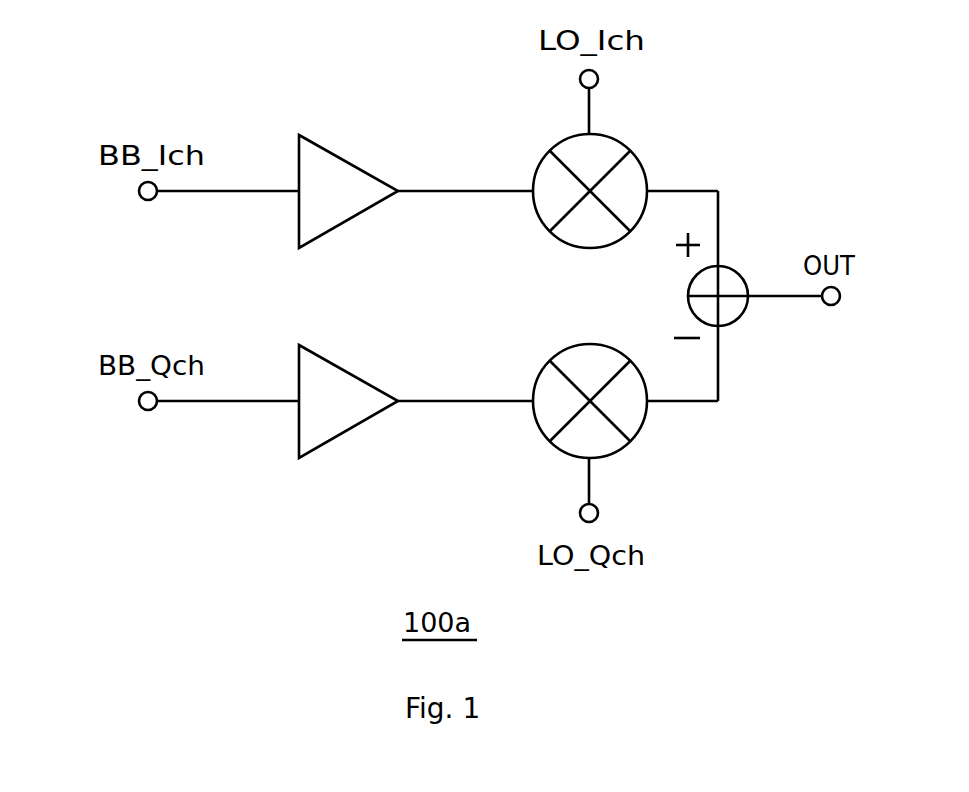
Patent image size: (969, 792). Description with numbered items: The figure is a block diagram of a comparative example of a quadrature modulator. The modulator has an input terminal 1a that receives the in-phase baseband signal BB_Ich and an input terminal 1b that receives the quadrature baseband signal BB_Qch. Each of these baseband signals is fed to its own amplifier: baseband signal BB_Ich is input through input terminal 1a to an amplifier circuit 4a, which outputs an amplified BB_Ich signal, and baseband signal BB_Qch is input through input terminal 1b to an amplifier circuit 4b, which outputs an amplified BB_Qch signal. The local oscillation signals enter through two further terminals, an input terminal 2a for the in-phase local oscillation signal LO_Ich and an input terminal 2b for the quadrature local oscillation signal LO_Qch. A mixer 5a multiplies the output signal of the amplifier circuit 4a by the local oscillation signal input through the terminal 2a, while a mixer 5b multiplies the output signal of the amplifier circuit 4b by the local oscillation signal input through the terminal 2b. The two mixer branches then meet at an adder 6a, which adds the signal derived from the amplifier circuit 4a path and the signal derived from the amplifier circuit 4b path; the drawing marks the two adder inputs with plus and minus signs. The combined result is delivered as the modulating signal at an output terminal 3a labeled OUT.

The input terminal 1a is at (139, 191).
The input terminal 1b is at (139, 401).
The input terminal 2a is at (599, 79).
The input terminal 2b is at (599, 513).
The output terminal 3a is at (841, 296).
The amplifier circuit 4a is at (351, 164).
The amplifier circuit 4b is at (351, 429).
The mixer 5a is at (540, 164).
The mixer 5b is at (540, 428).
The adder 6a is at (727, 266).